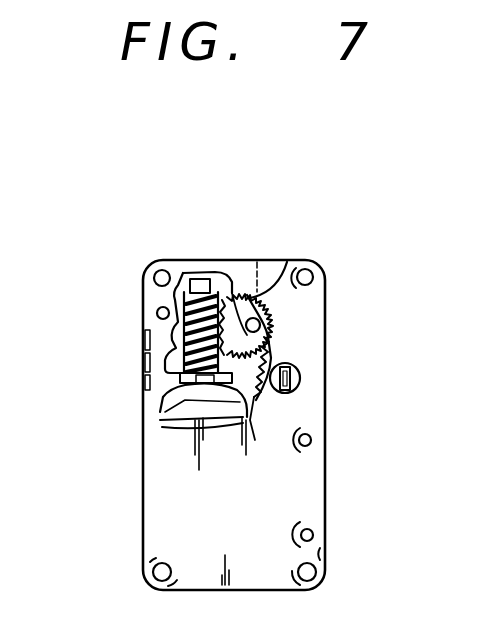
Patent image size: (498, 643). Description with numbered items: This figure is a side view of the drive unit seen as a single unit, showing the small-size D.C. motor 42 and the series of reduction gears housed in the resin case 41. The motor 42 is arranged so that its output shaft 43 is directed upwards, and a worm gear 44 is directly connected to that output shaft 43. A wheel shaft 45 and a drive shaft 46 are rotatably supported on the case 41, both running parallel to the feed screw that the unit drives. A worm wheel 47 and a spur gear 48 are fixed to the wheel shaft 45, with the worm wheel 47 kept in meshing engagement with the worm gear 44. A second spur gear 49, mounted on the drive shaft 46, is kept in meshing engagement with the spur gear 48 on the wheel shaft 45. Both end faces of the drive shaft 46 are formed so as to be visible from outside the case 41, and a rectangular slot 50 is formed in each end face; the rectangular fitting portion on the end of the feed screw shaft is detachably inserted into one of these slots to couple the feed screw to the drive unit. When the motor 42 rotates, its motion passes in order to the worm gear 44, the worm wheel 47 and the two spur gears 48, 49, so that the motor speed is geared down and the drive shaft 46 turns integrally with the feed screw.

The case 41 is at (148, 292).
The D.C. motor 42 is at (173, 400).
The output shaft 43 is at (160, 394).
The worm gear 44 is at (190, 300).
The wheel shaft 45 is at (270, 330).
The drive shaft 46 is at (291, 379).
The worm wheel 47 is at (258, 303).
The spur gear 48 is at (270, 292).
The spur gear 49 is at (258, 395).
The rectangular slot 50 is at (299, 386).